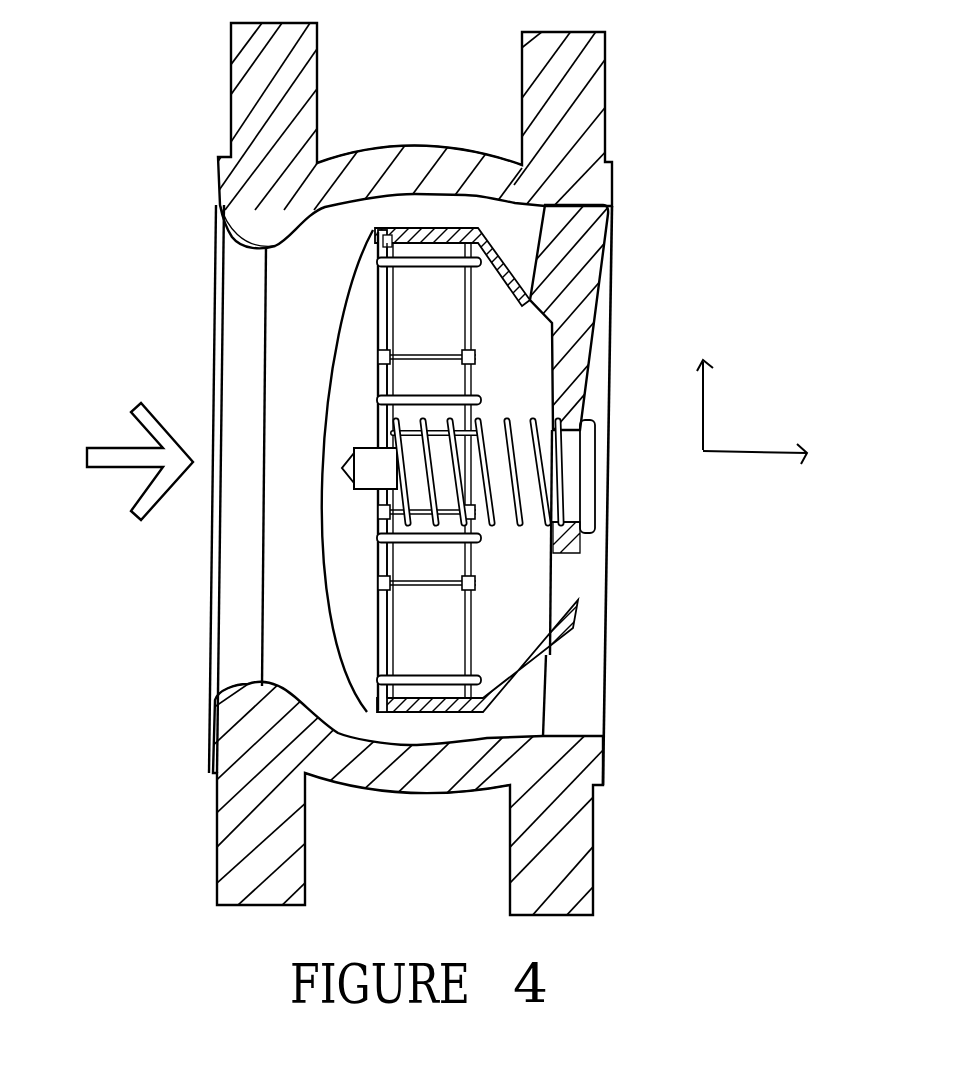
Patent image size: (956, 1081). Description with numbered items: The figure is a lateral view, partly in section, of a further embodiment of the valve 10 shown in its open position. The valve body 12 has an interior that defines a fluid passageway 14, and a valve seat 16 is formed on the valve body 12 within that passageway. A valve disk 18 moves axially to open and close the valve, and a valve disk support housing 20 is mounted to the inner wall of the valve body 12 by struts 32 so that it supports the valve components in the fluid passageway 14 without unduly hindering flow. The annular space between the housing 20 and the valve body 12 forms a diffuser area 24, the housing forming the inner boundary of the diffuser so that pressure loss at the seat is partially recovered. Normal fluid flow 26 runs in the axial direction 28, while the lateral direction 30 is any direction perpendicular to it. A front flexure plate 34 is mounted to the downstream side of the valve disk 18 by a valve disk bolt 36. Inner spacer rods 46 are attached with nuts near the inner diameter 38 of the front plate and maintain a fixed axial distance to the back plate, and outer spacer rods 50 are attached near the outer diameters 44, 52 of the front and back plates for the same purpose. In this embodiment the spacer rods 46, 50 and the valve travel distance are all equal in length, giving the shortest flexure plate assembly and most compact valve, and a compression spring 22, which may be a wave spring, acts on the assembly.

The valve 10 is at (158, 857).
The valve body 12 is at (608, 80).
The fluid passageway 14 is at (285, 635).
The valve seat 16 is at (278, 243).
The valve disk 18 is at (327, 590).
The valve disk support housing 20 is at (587, 353).
The compression spring 22 is at (523, 530).
The diffuser area 24 is at (486, 212).
The normal fluid flow 26 is at (120, 470).
The axial direction 28 is at (723, 454).
The lateral direction 30 is at (703, 400).
The struts 32 is at (593, 280).
The front flexure plate 34 is at (380, 316).
The valve disk bolt 36 is at (342, 464).
The inner diameter of front flexure plate 38 is at (360, 483).
The outer diameter of front flexure plate 44 is at (467, 235).
The inner spacer rods 46 is at (425, 352).
The outer spacer rods 50 is at (423, 265).
The outer diameter of back flexure plate 52 is at (393, 243).